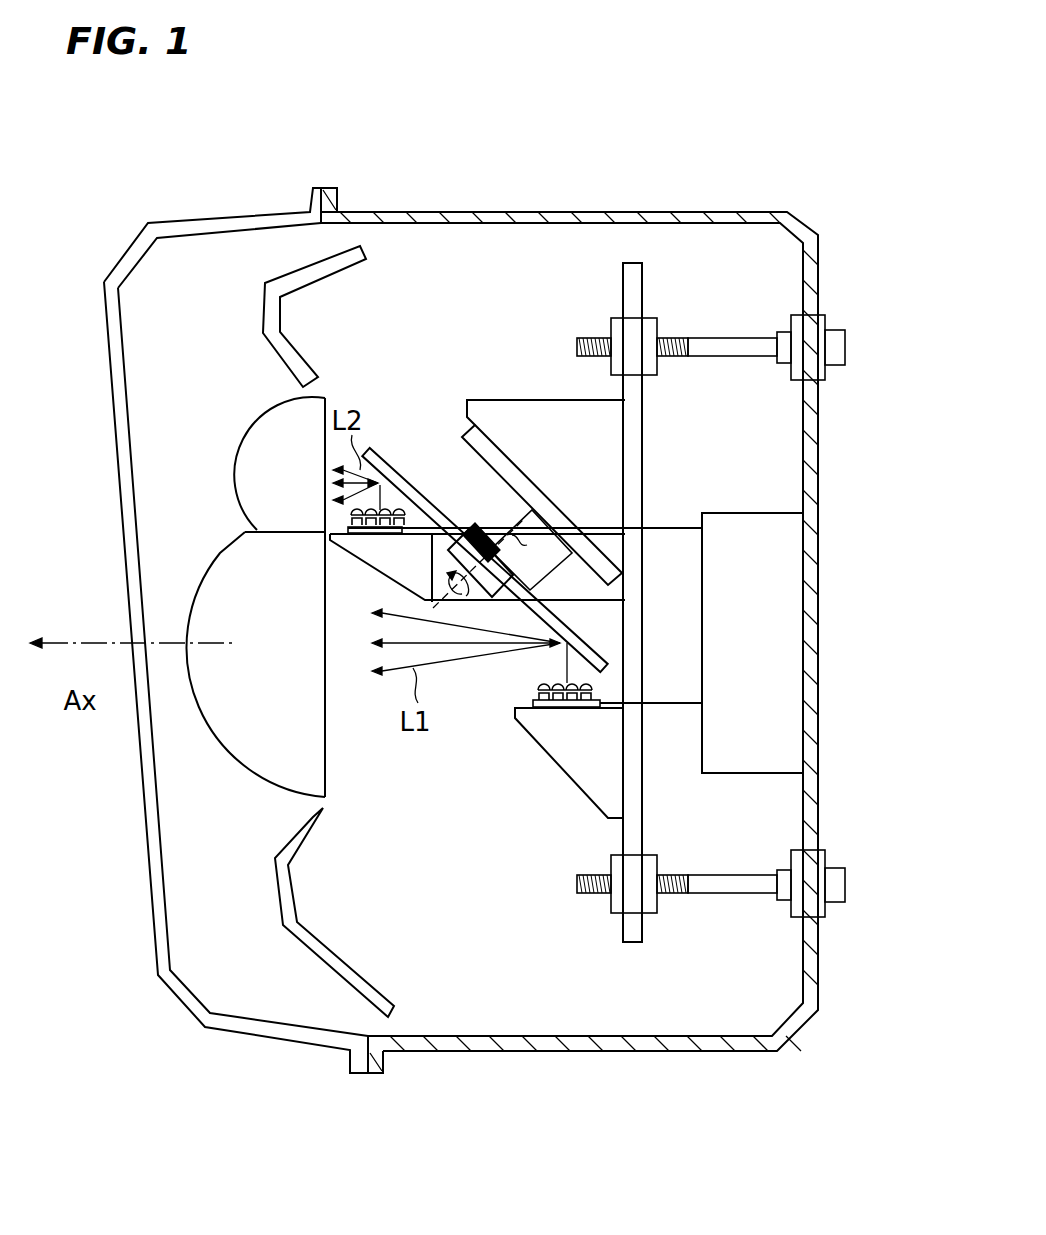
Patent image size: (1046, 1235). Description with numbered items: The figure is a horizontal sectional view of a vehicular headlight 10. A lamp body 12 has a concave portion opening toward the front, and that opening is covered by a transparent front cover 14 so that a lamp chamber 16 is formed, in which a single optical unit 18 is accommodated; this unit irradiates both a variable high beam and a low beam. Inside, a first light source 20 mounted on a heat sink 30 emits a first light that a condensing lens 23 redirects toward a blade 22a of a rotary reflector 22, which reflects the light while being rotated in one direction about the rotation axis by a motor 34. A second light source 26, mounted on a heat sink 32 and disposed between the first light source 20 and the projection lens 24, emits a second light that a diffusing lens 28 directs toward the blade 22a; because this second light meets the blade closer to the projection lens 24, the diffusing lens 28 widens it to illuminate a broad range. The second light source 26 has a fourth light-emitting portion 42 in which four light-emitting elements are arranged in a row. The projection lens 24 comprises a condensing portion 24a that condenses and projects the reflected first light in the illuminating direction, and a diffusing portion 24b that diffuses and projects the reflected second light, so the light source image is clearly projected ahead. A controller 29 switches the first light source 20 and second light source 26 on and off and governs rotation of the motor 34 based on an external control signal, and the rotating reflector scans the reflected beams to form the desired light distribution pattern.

The vehicular headlight 10 is at (443, 1209).
The lamp body 12 is at (680, 1052).
The front cover 14 is at (265, 1042).
The lamp chamber 16 is at (428, 413).
The optical unit 18 is at (487, 690).
The first light source 20 is at (612, 702).
The rotary reflector 22 is at (438, 495).
The blade 22a is at (378, 447).
The condensing lens 23 is at (610, 681).
The projection lens 24 is at (210, 621).
The condensing portion 24a is at (256, 770).
The diffusing portion 24b is at (247, 440).
The second light source 26 is at (335, 518).
The diffusing lens 28 is at (407, 518).
The controller 29 is at (762, 513).
The heat sink 30 is at (558, 766).
The heat sink 32 is at (352, 566).
The motor 34 is at (446, 506).
The fourth light-emitting portion 42 is at (470, 488).